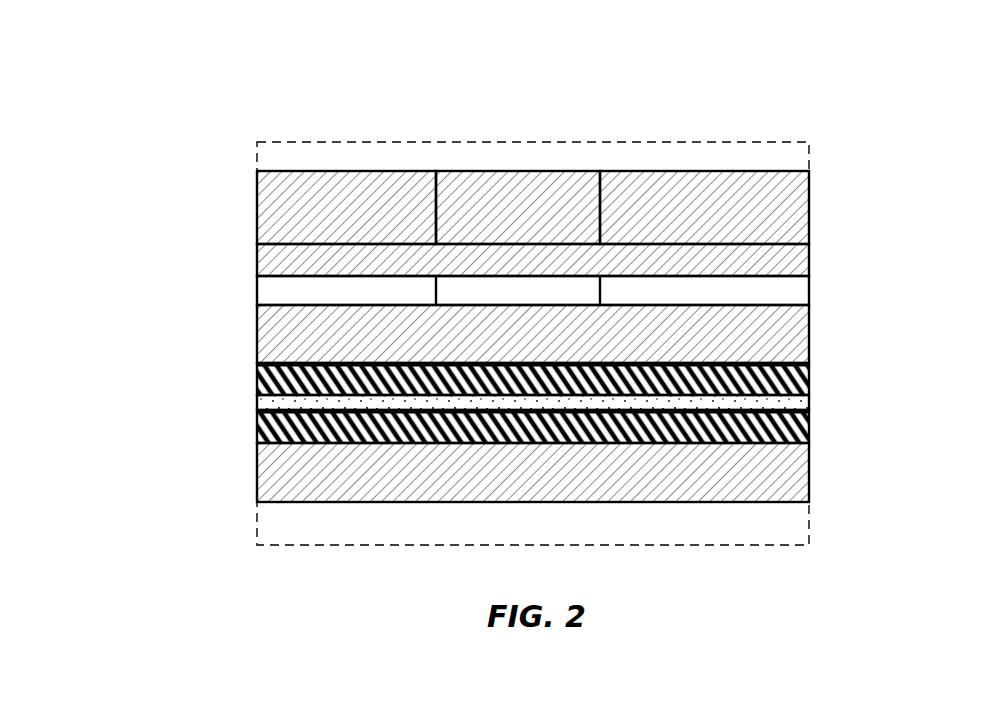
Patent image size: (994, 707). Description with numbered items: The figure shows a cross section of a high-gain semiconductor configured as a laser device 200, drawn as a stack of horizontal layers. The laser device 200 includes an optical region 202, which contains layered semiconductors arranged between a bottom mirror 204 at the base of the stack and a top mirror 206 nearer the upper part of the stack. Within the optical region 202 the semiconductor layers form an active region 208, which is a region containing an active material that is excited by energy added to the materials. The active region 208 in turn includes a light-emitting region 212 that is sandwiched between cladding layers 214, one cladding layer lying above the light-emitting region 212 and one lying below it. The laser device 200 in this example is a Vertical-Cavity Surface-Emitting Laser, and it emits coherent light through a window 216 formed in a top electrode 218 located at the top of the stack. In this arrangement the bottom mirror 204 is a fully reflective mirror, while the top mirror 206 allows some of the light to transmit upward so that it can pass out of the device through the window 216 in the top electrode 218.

The laser device 200 is at (519, 66).
The optical region 202 is at (130, 257).
The bottom mirror 204 is at (730, 502).
The top mirror 206 is at (811, 259).
The active region 208 is at (197, 365).
The light-emitting region 212 is at (811, 402).
The cladding layers 214 is at (263, 427).
The window 216 is at (457, 192).
The top electrode 218 is at (740, 192).